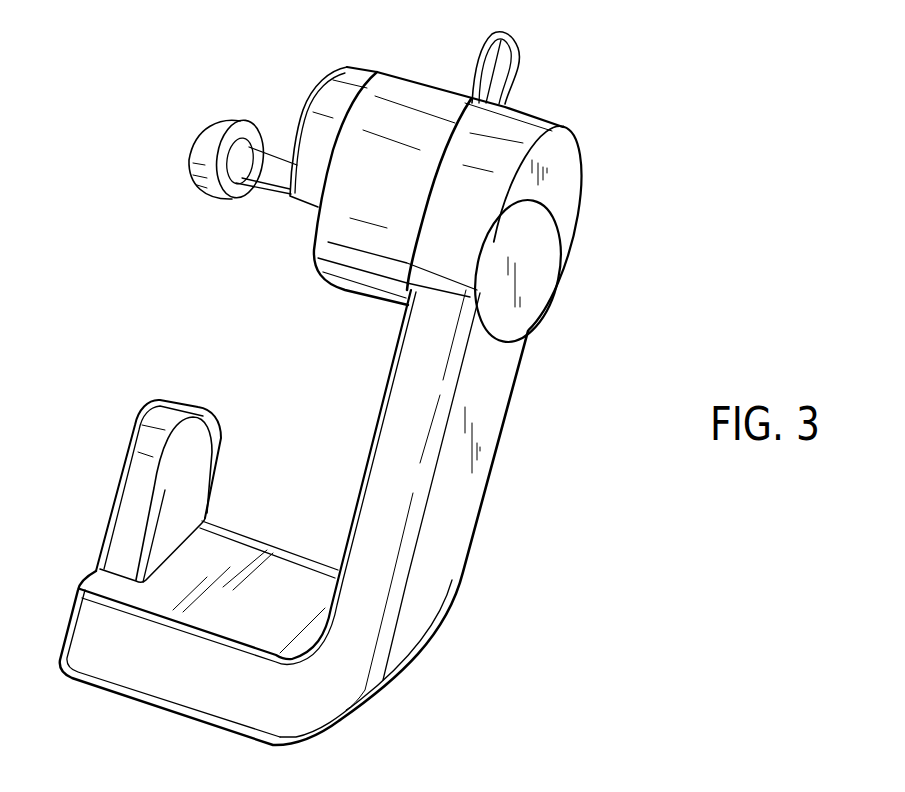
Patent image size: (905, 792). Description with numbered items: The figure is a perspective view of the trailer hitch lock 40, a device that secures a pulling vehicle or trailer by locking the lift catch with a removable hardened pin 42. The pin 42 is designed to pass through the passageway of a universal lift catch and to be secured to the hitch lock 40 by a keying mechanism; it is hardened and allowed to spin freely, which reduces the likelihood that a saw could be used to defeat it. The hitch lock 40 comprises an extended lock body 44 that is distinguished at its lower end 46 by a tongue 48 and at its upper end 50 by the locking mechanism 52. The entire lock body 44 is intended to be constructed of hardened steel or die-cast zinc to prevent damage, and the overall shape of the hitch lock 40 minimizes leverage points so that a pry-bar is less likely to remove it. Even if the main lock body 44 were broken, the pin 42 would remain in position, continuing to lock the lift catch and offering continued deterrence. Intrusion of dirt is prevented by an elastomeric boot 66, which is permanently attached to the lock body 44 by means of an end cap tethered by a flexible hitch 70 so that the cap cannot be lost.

The hitch lock 40 is at (533, 489).
The pin 42 is at (203, 124).
The lock body 44 is at (470, 527).
The lower end 46 is at (387, 682).
The tongue 48 is at (119, 485).
The upper end 50 is at (518, 341).
The locking mechanism 52 is at (566, 128).
The elastomeric boot 66 is at (423, 96).
The flexible hitch 70 is at (517, 48).